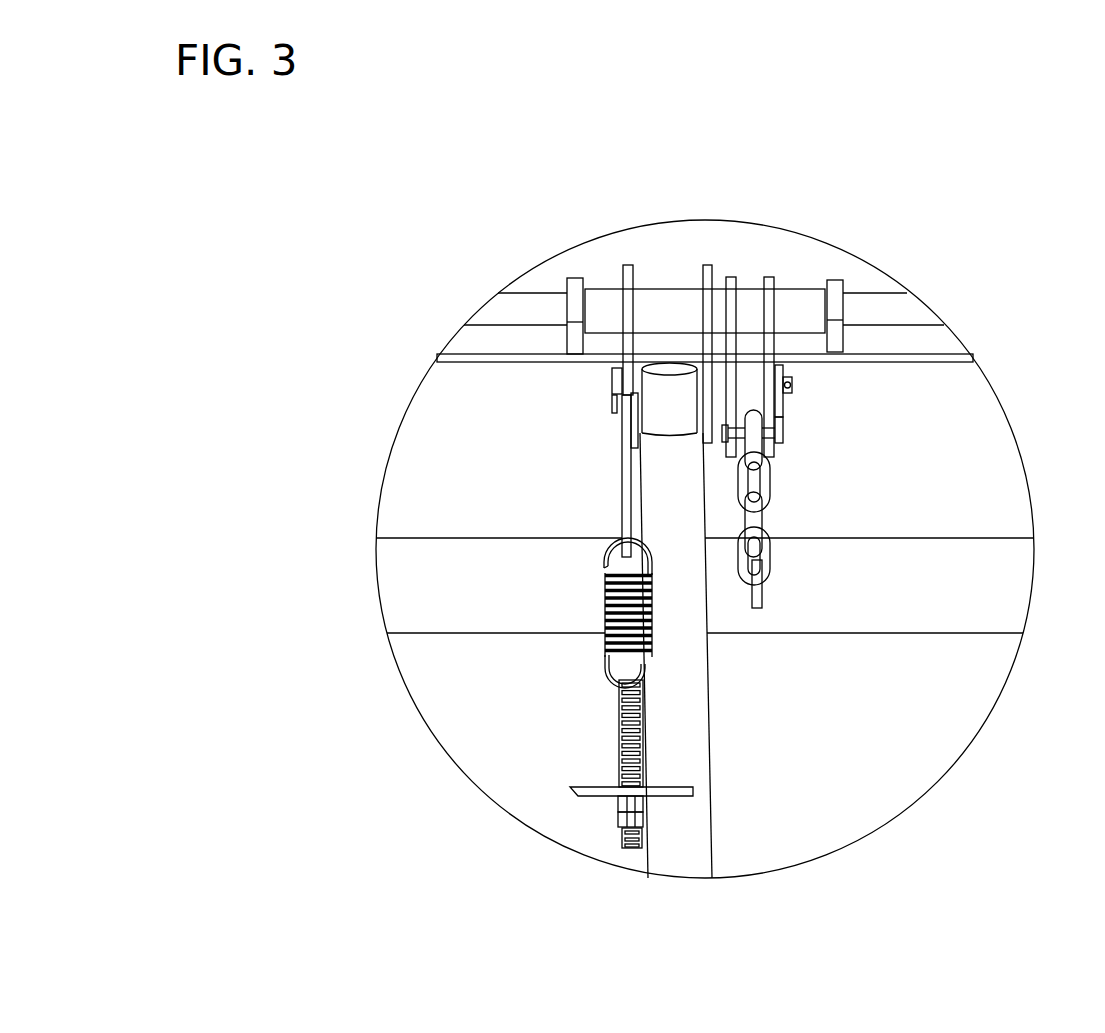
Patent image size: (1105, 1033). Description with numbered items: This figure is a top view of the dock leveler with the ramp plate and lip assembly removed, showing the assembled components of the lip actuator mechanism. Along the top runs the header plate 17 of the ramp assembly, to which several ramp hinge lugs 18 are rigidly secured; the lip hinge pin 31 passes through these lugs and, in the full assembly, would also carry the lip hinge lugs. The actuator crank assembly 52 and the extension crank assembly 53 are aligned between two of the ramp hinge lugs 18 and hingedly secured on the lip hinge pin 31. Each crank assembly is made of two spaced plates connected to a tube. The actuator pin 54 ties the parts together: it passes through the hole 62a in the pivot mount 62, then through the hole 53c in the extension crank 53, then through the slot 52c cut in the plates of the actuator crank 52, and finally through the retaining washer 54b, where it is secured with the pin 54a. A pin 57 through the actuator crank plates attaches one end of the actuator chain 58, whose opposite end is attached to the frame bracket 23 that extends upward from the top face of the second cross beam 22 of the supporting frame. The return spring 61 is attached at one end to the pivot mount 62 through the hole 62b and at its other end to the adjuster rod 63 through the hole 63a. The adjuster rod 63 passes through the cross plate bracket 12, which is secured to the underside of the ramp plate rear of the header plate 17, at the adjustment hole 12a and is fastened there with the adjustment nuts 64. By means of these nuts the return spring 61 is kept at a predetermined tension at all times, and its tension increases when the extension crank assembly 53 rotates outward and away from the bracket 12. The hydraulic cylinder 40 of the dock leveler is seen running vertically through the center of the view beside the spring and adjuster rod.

The cross plate 12 is at (575, 795).
The adjustment hole 12a is at (628, 798).
The header plate 17 is at (920, 354).
The ramp hinge lugs 18 is at (580, 292).
The second cross beam 22 is at (958, 600).
The frame bracket 23 is at (762, 606).
The lip hinge pin 31 is at (890, 312).
The hydraulic cylinder 40 is at (745, 742).
The actuator crank assembly 52 is at (770, 305).
The slot 52c is at (786, 380).
The extension crank assembly 53 is at (628, 305).
The hole 53c is at (630, 400).
The actuator pin 54 is at (612, 372).
The pin 54a is at (784, 399).
The retaining washer 54b is at (781, 420).
The pin 57 is at (780, 437).
The actuator chain 58 is at (755, 530).
The return spring 61 is at (605, 618).
The pivot mount 62 is at (624, 515).
The hole 62a is at (609, 409).
The hole 62b is at (605, 548).
The adjuster rod 63 is at (620, 750).
The hole 63a is at (620, 688).
The adjustment nuts 64 is at (643, 830).